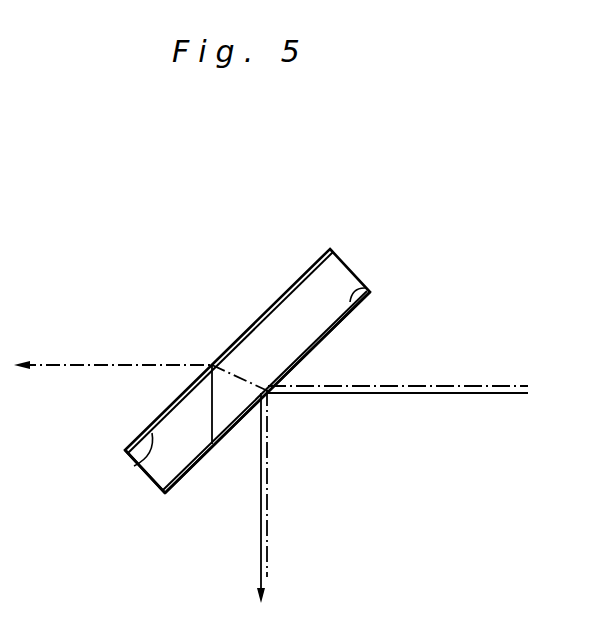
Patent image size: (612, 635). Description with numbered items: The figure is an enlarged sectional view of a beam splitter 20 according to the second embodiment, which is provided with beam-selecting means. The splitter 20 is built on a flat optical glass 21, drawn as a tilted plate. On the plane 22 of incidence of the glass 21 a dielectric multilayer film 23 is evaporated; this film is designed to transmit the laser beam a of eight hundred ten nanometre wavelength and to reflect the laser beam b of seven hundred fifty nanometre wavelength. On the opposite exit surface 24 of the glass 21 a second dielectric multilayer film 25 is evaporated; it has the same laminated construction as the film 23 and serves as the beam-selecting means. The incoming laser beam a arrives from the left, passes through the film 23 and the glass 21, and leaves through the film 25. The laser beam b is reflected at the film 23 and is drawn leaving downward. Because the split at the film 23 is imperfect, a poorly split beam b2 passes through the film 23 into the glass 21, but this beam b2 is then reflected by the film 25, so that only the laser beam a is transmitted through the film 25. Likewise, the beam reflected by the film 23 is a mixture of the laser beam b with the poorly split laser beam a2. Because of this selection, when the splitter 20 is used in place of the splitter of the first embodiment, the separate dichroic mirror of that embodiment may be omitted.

The beam splitter 20 is at (255, 302).
The flat optical glass 21 is at (347, 267).
The plane of incidence 22 is at (362, 284).
The dielectric multilayer film 23 is at (330, 332).
The exit surface 24 is at (140, 465).
The dielectric multilayer film 25 is at (163, 415).
The laser beam a is at (90, 360).
The poor split laser beam a2 is at (268, 488).
The laser beam b is at (258, 556).
The poor split beam b2 is at (240, 380).